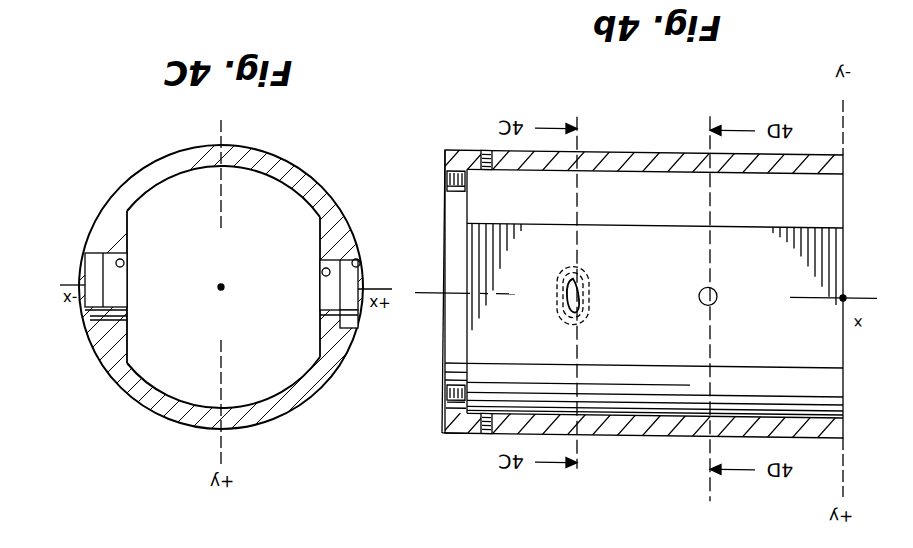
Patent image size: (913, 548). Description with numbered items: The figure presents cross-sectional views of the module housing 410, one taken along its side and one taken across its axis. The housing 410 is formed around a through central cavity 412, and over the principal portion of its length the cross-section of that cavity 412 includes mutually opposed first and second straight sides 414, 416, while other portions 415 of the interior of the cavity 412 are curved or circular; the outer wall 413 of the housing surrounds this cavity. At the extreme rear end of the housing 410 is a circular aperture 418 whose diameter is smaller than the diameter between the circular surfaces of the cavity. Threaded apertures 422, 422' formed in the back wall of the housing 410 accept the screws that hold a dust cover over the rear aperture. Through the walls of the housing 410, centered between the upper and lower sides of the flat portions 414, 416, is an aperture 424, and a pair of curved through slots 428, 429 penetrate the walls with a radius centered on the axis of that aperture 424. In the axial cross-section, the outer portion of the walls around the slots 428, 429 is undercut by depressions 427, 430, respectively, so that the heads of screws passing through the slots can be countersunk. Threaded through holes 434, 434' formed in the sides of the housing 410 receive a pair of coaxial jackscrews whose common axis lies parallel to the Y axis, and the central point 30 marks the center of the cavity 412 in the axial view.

In FIG. 4B, the housing 410 is at (632, 80).
In FIG. 4B, the central cavity 412 is at (818, 207).
In FIG. 4C, the central cavity 412 is at (190, 204).
In FIG. 4B, the outer wall 413 is at (843, 172).
In FIG. 4B, the first straight side 414 is at (840, 253).
In FIG. 4C, the first straight side 414 is at (128, 325).
In FIG. 4B, the curved portion 415 is at (842, 378).
In FIG. 4C, the second straight side 416 is at (320, 326).
In FIG. 4B, the circular aperture 418 is at (464, 341).
In FIG. 4B, the seal 422 is at (483, 398).
In FIG. 4B, the threaded aperture 422' is at (485, 184).
In FIG. 4B, the aperture 424 is at (714, 300).
In FIG. 4B, the depression 427 is at (588, 312).
In FIG. 4C, the depression 427 is at (88, 253).
In FIG. 4B, the curved through slot 428 is at (560, 272).
In FIG. 4C, the curved through slot 428 is at (124, 263).
In FIG. 4C, the curved through slot 429 is at (322, 272).
In FIG. 4C, the depression 430 is at (359, 261).
In FIG. 4B, the threaded through hole 434 is at (465, 440).
In FIG. 4B, the threaded through hole 434' is at (464, 143).
In FIG. 4B, the axis / center point 30 is at (430, 292).
In FIG. 4C, the axis / center point 30 is at (221, 287).